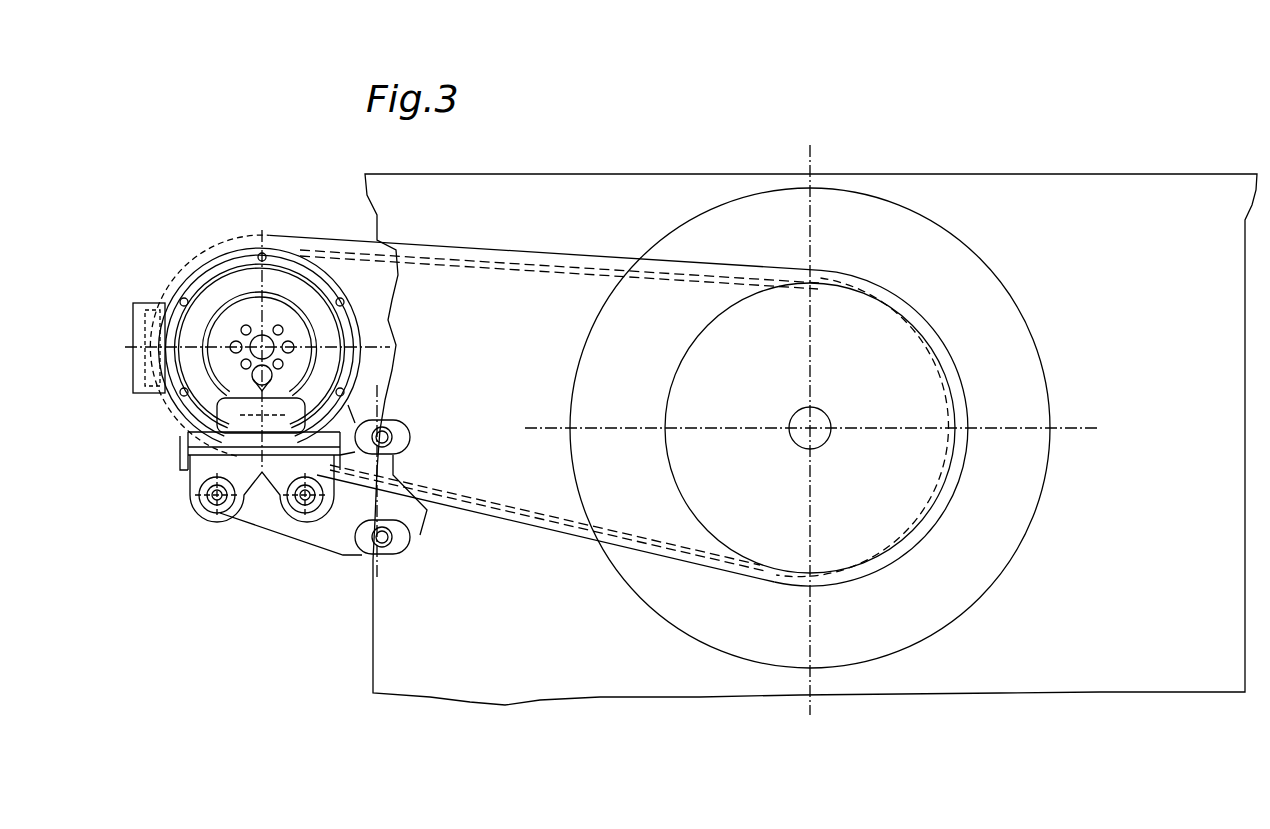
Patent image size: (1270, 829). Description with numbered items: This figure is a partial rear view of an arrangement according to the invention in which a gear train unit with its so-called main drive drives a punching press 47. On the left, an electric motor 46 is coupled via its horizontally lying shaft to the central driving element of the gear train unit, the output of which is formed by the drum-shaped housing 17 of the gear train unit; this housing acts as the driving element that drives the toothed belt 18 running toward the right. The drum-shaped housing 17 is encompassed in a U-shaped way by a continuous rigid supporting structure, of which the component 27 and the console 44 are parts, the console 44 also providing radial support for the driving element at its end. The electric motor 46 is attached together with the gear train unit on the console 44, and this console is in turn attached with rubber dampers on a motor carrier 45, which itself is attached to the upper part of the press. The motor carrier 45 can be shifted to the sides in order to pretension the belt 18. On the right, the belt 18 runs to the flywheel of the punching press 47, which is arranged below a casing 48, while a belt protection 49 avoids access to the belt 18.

The drum-shaped housing 17 is at (233, 273).
The toothed belt 18 is at (353, 258).
The rigid supporting structure component 27 is at (207, 410).
The console 44 is at (202, 463).
The motor carrier 45 is at (262, 505).
The electric motor 46 is at (183, 273).
The punching press 47 is at (540, 208).
The casing 48 is at (847, 208).
The belt protection 49 is at (908, 307).